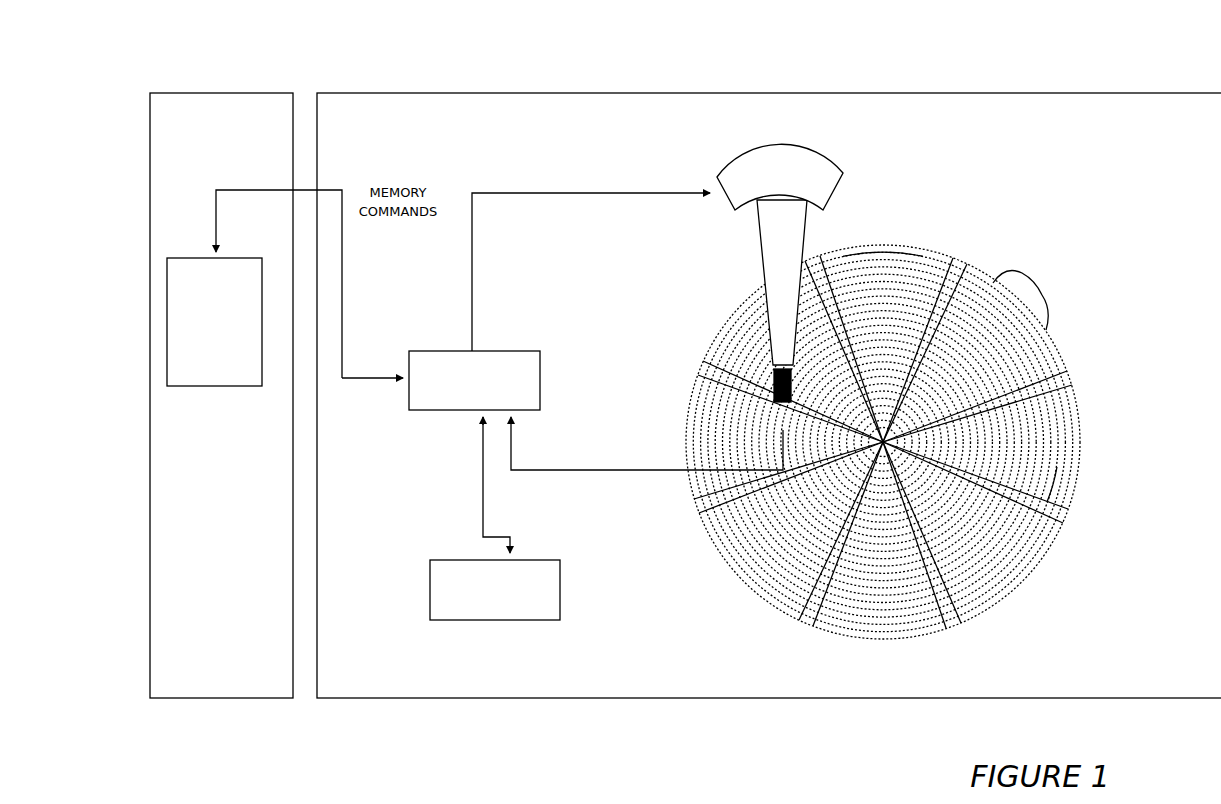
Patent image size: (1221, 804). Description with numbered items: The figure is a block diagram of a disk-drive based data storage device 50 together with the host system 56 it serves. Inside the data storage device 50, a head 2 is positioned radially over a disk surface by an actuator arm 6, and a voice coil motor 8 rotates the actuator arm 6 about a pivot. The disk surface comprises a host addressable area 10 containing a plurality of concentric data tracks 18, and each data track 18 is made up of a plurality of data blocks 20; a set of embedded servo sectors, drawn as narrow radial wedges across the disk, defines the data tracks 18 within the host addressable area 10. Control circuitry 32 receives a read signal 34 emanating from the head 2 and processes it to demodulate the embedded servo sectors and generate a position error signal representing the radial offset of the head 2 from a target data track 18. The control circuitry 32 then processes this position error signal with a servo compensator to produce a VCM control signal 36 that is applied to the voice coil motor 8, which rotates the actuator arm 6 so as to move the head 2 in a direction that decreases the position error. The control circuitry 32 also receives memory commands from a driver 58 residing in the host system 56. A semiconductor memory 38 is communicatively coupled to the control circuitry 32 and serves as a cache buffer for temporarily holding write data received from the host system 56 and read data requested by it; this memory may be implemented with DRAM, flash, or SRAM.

The head 2 is at (775, 437).
The actuator arm 6 is at (698, 360).
The voice coil motor 8 is at (733, 210).
The host addressable area 10 is at (1046, 544).
The data tracks 18 is at (897, 257).
The data blocks 20 is at (1032, 300).
The control circuitry 32 is at (512, 350).
The read signal 34 is at (592, 470).
The VCM control signal 36 is at (472, 299).
The semiconductor memory 38 is at (545, 620).
The data storage device 50 is at (412, 92).
The host system 56 is at (222, 92).
The driver 58 is at (220, 386).